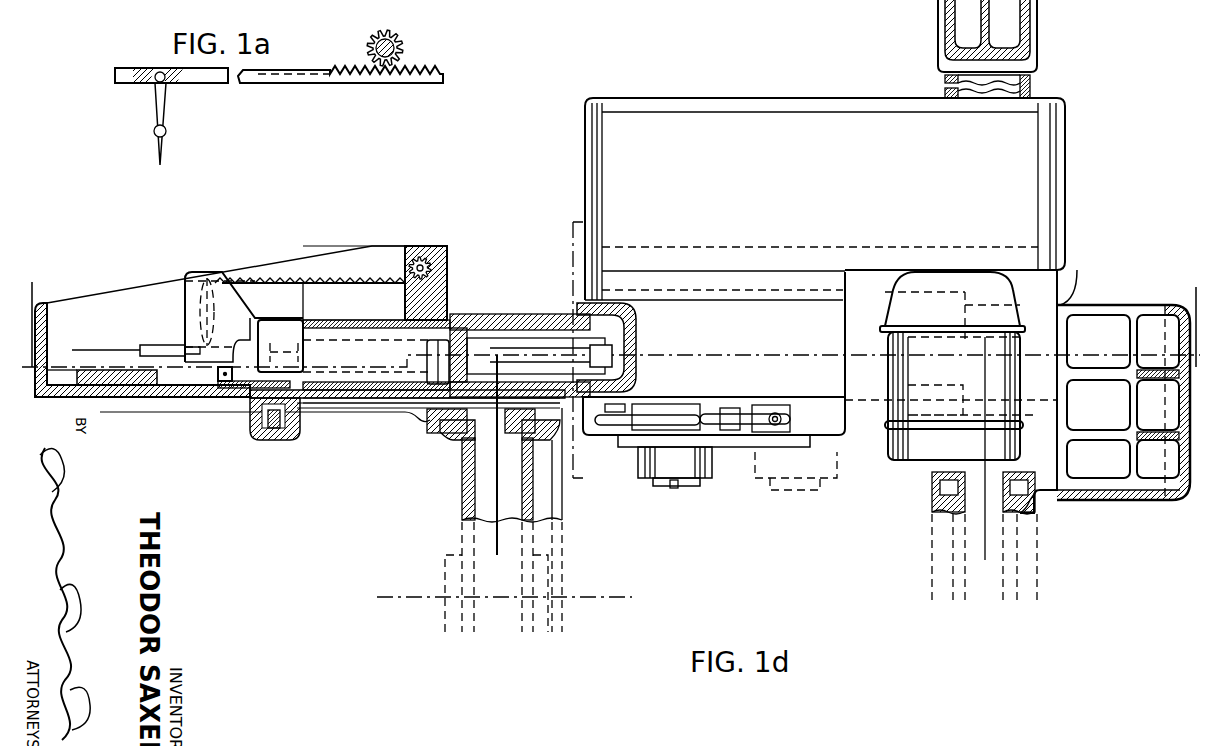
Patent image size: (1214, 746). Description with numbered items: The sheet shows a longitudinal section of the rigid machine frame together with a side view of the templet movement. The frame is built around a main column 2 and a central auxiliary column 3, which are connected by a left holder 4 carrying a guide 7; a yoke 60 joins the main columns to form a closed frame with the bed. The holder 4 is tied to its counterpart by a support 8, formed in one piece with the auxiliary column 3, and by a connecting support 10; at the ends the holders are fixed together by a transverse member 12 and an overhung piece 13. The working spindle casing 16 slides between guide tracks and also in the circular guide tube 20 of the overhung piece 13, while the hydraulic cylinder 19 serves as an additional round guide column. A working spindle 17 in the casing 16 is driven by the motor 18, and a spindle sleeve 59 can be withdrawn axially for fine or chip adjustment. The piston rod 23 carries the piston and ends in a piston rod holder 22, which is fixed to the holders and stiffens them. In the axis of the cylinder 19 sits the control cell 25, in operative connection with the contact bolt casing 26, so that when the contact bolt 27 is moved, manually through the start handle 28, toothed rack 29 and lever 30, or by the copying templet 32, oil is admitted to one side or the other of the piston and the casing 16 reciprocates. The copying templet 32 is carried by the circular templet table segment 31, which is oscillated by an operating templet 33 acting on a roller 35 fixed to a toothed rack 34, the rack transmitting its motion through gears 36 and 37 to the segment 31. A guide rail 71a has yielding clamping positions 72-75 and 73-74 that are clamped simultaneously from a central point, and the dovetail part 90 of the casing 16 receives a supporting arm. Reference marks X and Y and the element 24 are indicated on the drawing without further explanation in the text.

In FIG. 1D, the main column 2 is at (614, 312).
In FIG. 1D, the central auxiliary column 3 is at (446, 492).
In FIG. 1D, the left holder 4 is at (872, 404).
In FIG. 1D, the guide 7 is at (1030, 80).
In FIG. 1D, the support 8 is at (462, 450).
In FIG. 1D, the connecting support 10 is at (1027, 507).
In FIG. 1D, the transverse member 12 is at (1115, 500).
In FIG. 1D, the overhung piece 13 is at (372, 250).
In FIG. 1D, the working spindle casing 16 is at (1040, 181).
In FIG. 1D, the working spindle 17 is at (661, 488).
In FIG. 1D, the motor 18 is at (997, 300).
In FIG. 1D, the hydraulic cylinder 19 is at (509, 330).
In FIG. 1D, the guide tube 20 is at (487, 314).
In FIG. 1D, the piston rod holder 22 is at (636, 338).
In FIG. 1D, the piston rod 23 is at (537, 348).
In FIG. 1D, the piston head 24 is at (430, 344).
In FIG. 1D, the control cell 25 is at (283, 330).
In FIG. 1D, the contact bolt casing 26 is at (219, 296).
In FIG. 1D, the contact bolt 27 is at (153, 345).
In FIG. 1A, the start handle 28 is at (398, 46).
In FIG. 1D, the start handle 28 is at (423, 262).
In FIG. 1D, the toothed rack 29 is at (308, 277).
In FIG. 1A, the lever 30 is at (166, 113).
In FIG. 1D, the lever 30 is at (200, 293).
In FIG. 1D, the circular templet table segment 31 is at (76, 394).
In FIG. 1D, the copying templet 32 is at (104, 345).
In FIG. 1D, the operating templet 33 is at (430, 425).
In FIG. 1D, the toothed rack 34 is at (356, 408).
In FIG. 1D, the roller 35 is at (420, 416).
In FIG. 1D, the gear 36 is at (283, 436).
In FIG. 1D, the gear 37 is at (248, 402).
In FIG. 1D, the spindle sleeve 59 is at (640, 465).
In FIG. 1D, the yoke 60 is at (1025, 38).
In FIG. 1D, the guide rail 71a is at (838, 432).
In FIG. 1D, the clamping positions 72-75 is at (782, 408).
In FIG. 1D, the clamping positions 73-74 is at (625, 410).
In FIG. 1D, the dovetail part 90 is at (728, 448).
In FIG. 1D, the position X is at (693, 285).
In FIG. 1D, the position Y is at (738, 355).